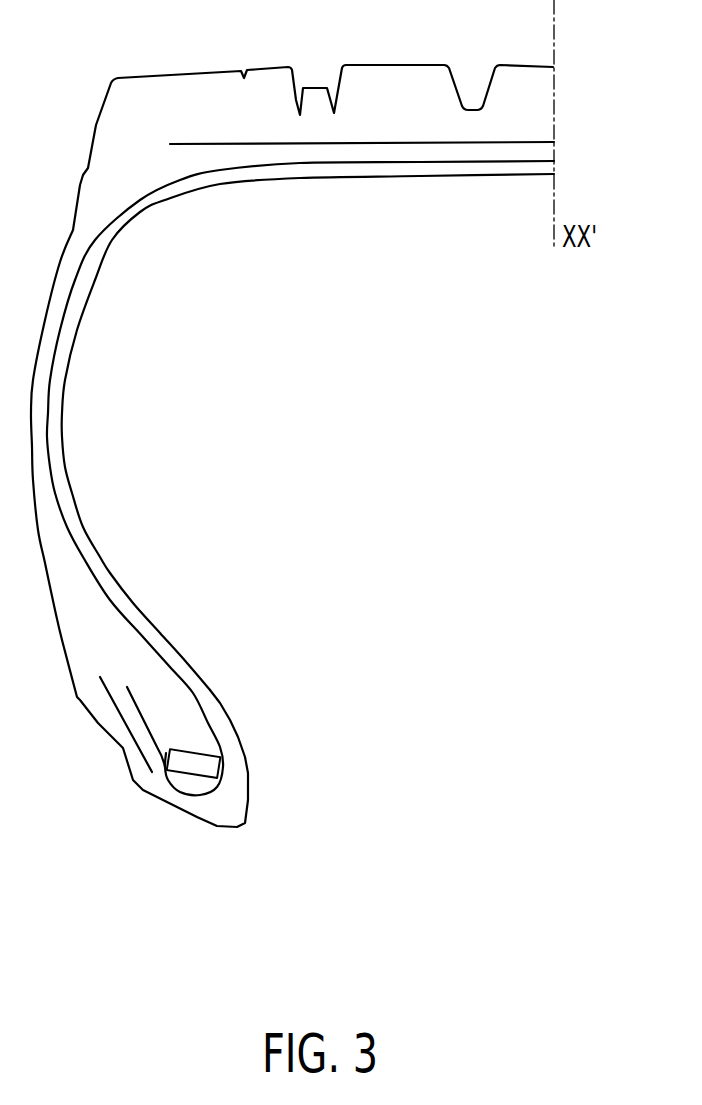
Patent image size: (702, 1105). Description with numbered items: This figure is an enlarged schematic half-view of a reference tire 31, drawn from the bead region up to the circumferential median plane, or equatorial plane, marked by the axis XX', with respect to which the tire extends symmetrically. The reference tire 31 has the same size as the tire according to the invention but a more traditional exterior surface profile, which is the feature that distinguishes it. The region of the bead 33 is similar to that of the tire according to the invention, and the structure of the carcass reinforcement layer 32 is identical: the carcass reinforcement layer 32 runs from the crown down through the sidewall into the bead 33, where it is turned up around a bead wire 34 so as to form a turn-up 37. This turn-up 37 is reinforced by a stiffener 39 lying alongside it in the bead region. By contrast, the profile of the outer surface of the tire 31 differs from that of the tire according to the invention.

The tire 31 is at (108, 136).
The carcass reinforcement layer 32 is at (253, 182).
The bead 33 is at (190, 697).
The bead wire 34 is at (222, 749).
The turn-up 37 is at (145, 690).
The stiffener 39 is at (106, 727).